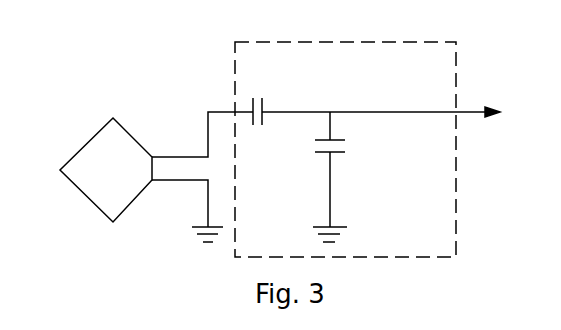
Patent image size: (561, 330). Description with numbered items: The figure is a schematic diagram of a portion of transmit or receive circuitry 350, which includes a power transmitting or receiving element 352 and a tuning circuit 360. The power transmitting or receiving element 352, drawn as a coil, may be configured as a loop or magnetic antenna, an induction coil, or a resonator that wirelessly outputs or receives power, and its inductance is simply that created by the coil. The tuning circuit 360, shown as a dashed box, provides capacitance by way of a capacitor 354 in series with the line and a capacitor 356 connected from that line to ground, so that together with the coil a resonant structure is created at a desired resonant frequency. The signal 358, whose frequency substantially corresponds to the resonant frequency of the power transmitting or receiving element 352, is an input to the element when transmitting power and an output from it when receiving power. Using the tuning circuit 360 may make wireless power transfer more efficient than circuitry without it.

The transmit or receive circuitry 350 is at (133, 90).
The power transmitting or receiving element 352 is at (86, 143).
The capacitor 354 is at (264, 109).
The capacitor 356 is at (338, 154).
The signal 358 is at (362, 110).
The tuning circuit 360 is at (440, 41).